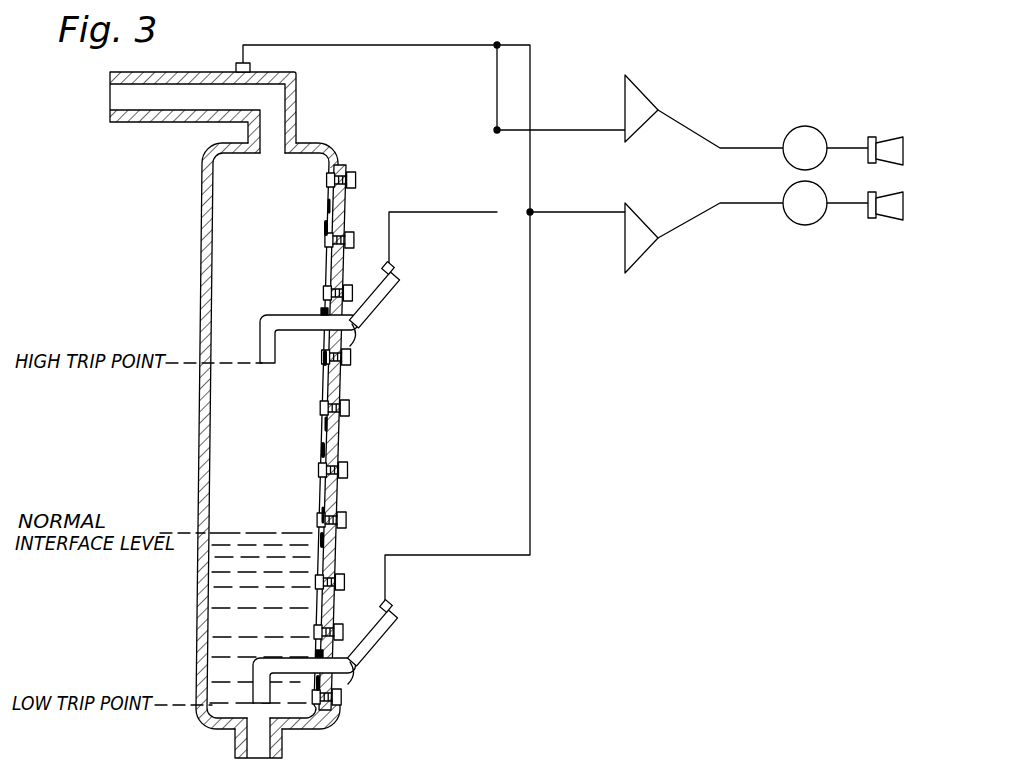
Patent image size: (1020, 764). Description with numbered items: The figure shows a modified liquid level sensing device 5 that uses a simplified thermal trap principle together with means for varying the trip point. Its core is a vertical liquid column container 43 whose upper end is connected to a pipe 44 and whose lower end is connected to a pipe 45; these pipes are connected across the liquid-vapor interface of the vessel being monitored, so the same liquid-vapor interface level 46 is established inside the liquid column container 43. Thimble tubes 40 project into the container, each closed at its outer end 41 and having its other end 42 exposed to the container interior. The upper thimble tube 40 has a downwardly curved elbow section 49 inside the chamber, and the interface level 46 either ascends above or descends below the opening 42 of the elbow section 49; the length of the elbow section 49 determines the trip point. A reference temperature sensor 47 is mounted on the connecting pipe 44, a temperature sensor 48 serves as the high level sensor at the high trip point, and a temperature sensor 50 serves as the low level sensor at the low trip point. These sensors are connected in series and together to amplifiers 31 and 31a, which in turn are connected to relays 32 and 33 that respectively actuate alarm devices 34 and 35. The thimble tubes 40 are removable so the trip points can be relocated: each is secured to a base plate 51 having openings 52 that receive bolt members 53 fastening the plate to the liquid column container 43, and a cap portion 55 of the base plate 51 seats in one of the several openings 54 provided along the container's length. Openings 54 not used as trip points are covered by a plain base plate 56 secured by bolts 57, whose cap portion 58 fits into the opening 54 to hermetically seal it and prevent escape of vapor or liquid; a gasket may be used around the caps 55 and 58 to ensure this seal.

The liquid level sensing device 5 is at (230, 402).
The amplifier 31 is at (640, 218).
The amplifier 31a is at (645, 95).
The relay 32 is at (805, 126).
The relay 33 is at (800, 226).
The alarm device 34 is at (897, 136).
The alarm device 35 is at (895, 221).
The thimble tube 40 is at (414, 449).
The outer end 41 is at (408, 278).
The other end 42 is at (273, 366).
The liquid column container 43 is at (200, 296).
The pipe 44 is at (193, 72).
The pipe 45 is at (234, 742).
The liquid-vapor interface level 46 is at (253, 533).
The temperature sensor 47 is at (251, 66).
The temperature sensor 48 is at (393, 264).
The elbow section 49 is at (286, 521).
The temperature sensor 50 is at (391, 605).
The base plate 51 is at (347, 366).
The opening 52 is at (343, 291).
The bolt member 53 is at (351, 329).
The opening 54 is at (328, 228).
The cap portion 55 is at (325, 310).
The plain base plate 56 is at (347, 210).
The bolt 57 is at (354, 183).
The cap portion 58 is at (329, 205).